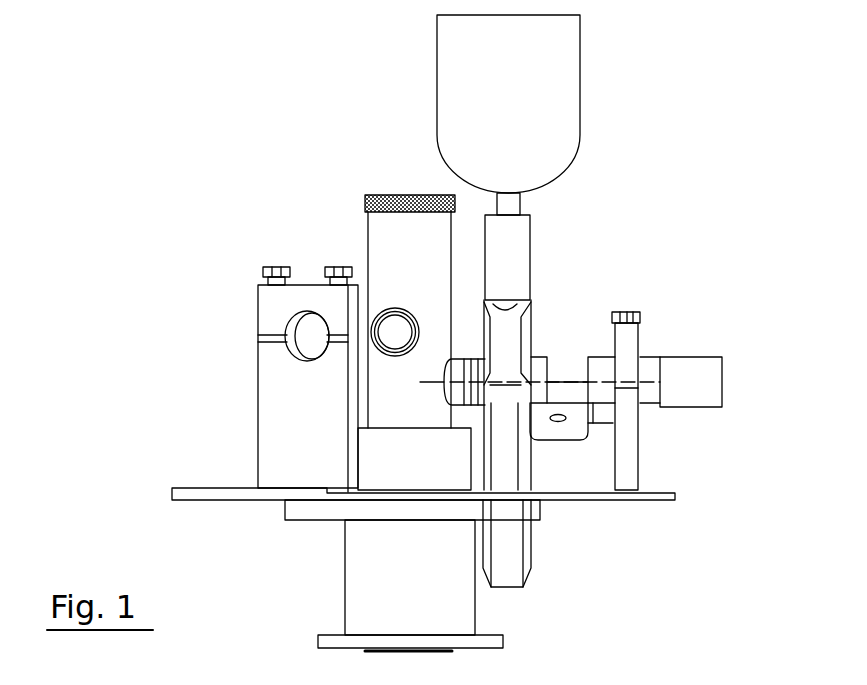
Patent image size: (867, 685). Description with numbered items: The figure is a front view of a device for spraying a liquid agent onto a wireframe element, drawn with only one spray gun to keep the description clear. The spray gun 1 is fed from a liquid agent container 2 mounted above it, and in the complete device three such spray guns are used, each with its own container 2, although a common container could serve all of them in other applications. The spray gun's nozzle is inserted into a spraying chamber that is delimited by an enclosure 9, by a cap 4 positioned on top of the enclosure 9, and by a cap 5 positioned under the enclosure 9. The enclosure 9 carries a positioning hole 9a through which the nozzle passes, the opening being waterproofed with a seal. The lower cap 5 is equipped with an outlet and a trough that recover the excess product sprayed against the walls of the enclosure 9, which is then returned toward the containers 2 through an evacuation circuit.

The spray gun 1 is at (558, 341).
The liquid agent container 2 is at (518, 102).
The cap 4 is at (397, 193).
The cap 5 is at (422, 469).
The enclosure 9 is at (365, 235).
The positioning hole 9a is at (393, 307).